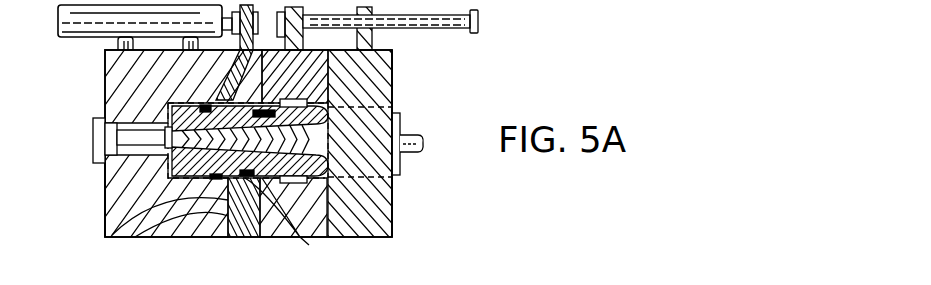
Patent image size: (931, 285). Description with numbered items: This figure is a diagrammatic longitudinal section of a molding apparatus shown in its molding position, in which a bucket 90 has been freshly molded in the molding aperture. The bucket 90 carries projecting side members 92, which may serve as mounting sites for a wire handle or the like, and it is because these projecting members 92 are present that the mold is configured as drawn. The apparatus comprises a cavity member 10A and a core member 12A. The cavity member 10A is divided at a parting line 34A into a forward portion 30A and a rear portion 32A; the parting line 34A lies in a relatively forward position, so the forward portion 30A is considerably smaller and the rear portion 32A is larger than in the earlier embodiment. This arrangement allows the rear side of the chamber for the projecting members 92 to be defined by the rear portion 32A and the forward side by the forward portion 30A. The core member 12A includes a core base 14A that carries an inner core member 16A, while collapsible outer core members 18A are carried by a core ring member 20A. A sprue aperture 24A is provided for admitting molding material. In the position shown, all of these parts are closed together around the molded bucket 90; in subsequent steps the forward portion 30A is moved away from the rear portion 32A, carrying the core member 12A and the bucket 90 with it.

The cavity member 10A is at (97, 218).
The core member 12A is at (400, 74).
The core base 14A is at (370, 209).
The inner core member 16A is at (312, 151).
The collapsible outer core members 18A is at (103, 182).
The core ring member 20A is at (315, 80).
The sprue aperture 24A is at (104, 135).
The forward portion 30A is at (233, 238).
The rear portion 32A is at (157, 90).
The parting line 34A is at (166, 209).
The bucket 90 is at (167, 230).
The projecting side members 92 is at (228, 92).